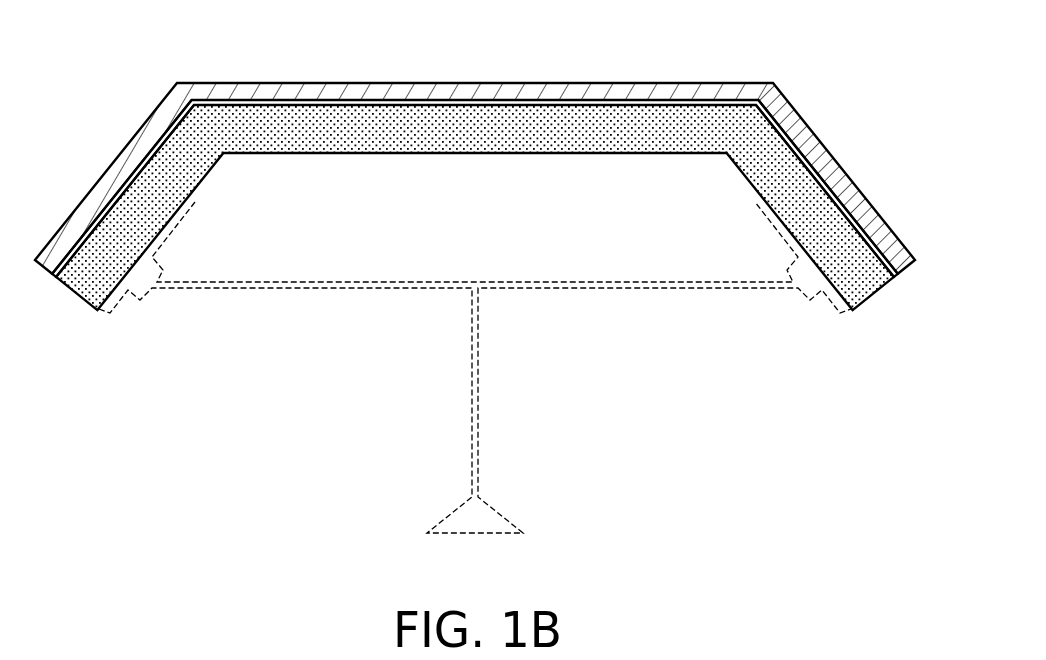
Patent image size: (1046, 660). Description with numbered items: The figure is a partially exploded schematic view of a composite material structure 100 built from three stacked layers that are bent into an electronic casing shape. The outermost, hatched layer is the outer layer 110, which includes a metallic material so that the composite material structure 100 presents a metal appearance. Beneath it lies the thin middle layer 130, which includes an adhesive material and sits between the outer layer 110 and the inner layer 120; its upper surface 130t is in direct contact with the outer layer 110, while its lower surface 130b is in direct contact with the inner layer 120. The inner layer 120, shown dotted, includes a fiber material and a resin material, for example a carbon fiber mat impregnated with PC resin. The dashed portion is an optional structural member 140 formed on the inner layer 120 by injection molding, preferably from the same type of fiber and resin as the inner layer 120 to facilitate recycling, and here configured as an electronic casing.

The composite material structure 100 is at (875, 548).
The outer layer 110 is at (255, 92).
The inner layer 120 is at (392, 117).
The middle layer 130 is at (312, 103).
The upper surface 130t is at (478, 92).
The lower surface 130b is at (508, 115).
The structural member 140 is at (348, 288).